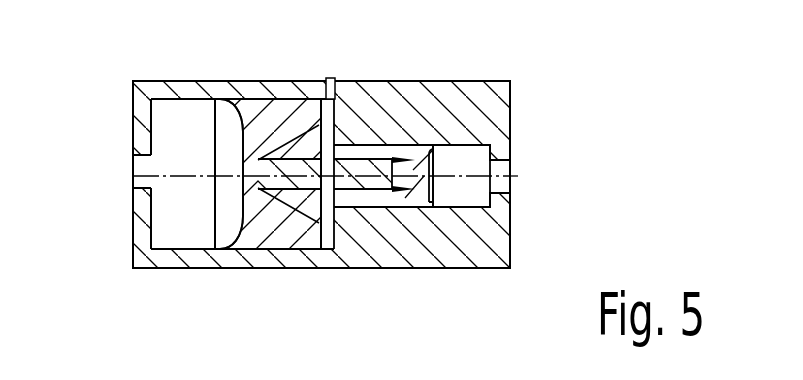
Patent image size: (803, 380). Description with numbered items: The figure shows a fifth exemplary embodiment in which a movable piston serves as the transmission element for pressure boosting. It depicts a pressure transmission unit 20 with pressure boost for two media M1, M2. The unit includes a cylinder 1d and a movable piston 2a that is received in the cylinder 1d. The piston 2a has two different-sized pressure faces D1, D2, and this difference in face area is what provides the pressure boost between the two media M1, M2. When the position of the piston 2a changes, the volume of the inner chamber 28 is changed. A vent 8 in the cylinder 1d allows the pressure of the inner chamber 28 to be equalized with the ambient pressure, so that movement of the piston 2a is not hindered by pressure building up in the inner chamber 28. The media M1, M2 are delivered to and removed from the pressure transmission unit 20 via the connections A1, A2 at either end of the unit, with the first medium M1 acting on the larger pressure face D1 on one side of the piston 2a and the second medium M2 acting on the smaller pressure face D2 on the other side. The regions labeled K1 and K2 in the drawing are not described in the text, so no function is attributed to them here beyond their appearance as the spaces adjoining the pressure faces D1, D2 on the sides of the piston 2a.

The pressure transmission unit 20 is at (124, 93).
The cylinder 1d is at (383, 257).
The movable piston 2a is at (247, 232).
The inner chamber 28 is at (299, 145).
The vent 8 is at (342, 75).
The first chamber K1 is at (186, 137).
The second chamber K2 is at (464, 201).
The first medium M1 is at (186, 119).
The second medium M2 is at (450, 156).
The first pressure face D1 is at (200, 202).
The second pressure face D2 is at (450, 177).
The first connection A1 is at (121, 179).
The second connection A2 is at (522, 192).